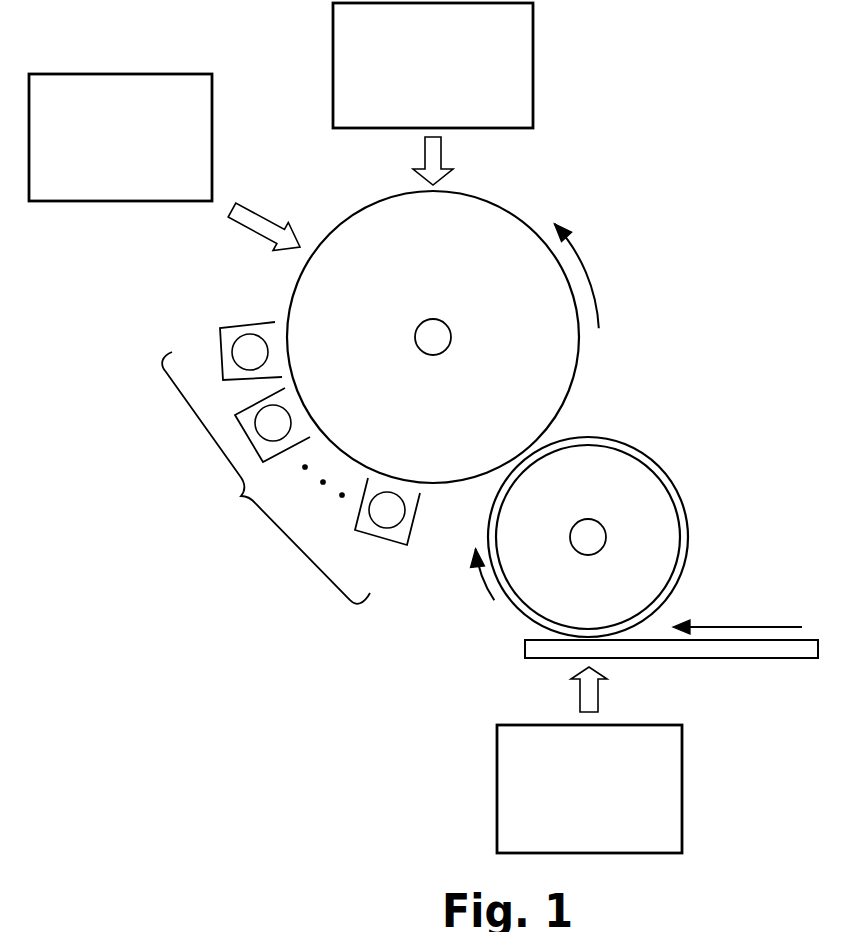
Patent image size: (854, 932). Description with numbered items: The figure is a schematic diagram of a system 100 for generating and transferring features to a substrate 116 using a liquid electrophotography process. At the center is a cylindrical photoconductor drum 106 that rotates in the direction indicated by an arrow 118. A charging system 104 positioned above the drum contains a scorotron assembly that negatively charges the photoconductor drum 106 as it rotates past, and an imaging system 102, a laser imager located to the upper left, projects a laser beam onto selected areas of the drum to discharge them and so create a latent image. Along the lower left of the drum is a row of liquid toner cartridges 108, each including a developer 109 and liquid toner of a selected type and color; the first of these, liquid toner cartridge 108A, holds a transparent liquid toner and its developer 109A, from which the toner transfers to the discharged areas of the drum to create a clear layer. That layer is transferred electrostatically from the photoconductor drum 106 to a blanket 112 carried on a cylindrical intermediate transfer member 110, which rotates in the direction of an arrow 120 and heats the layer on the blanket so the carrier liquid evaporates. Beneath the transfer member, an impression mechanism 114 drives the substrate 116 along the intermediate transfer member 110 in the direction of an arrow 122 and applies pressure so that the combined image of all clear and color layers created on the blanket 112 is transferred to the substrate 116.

The system 100 is at (183, 671).
The imaging system 102 is at (107, 201).
The charging system 104 is at (500, 130).
The cylindrical photoconductor drum 106 is at (577, 370).
The liquid toner cartridges 108 is at (243, 495).
The liquid toner cartridge 108A is at (245, 325).
The developer 109 is at (385, 530).
The developer 109A is at (233, 342).
The cylindrical intermediate transfer member 110 is at (655, 463).
The blanket 112 is at (687, 500).
The impression mechanism 114 is at (682, 786).
The substrate 116 is at (788, 658).
The arrow 118 is at (590, 272).
The arrow 120 is at (488, 607).
The arrow 122 is at (763, 625).